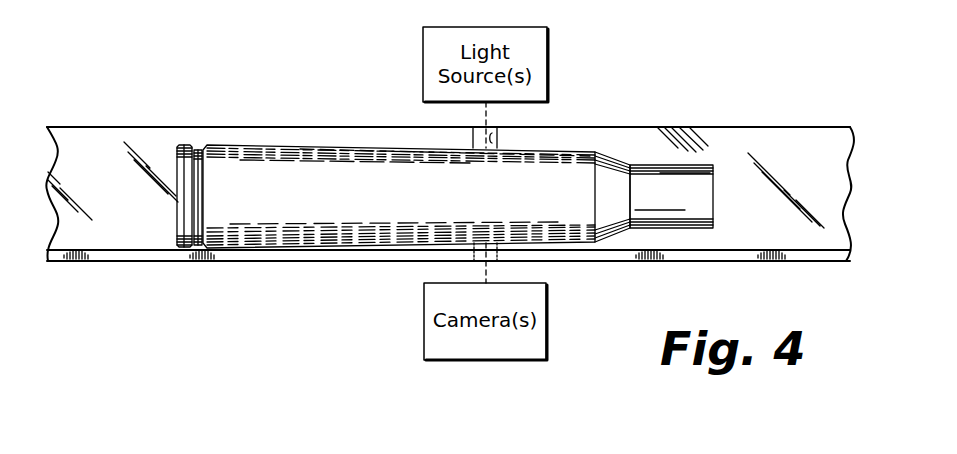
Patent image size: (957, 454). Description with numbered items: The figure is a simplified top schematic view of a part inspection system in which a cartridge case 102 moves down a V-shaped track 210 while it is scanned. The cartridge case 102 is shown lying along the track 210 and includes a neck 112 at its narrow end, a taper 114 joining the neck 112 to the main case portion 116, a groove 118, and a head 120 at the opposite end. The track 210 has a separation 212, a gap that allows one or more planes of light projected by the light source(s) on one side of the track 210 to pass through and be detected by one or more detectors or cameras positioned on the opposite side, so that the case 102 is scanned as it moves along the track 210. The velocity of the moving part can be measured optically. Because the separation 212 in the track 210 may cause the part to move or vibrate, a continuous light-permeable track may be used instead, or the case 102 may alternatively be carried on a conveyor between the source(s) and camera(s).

The cartridge case 102 is at (236, 145).
The neck 112 is at (672, 164).
The taper 114 is at (610, 160).
The case portion 116 is at (410, 148).
The groove 118 is at (198, 149).
The head 120 is at (190, 144).
The V-shaped track 210 is at (778, 128).
The separation 212 is at (497, 134).